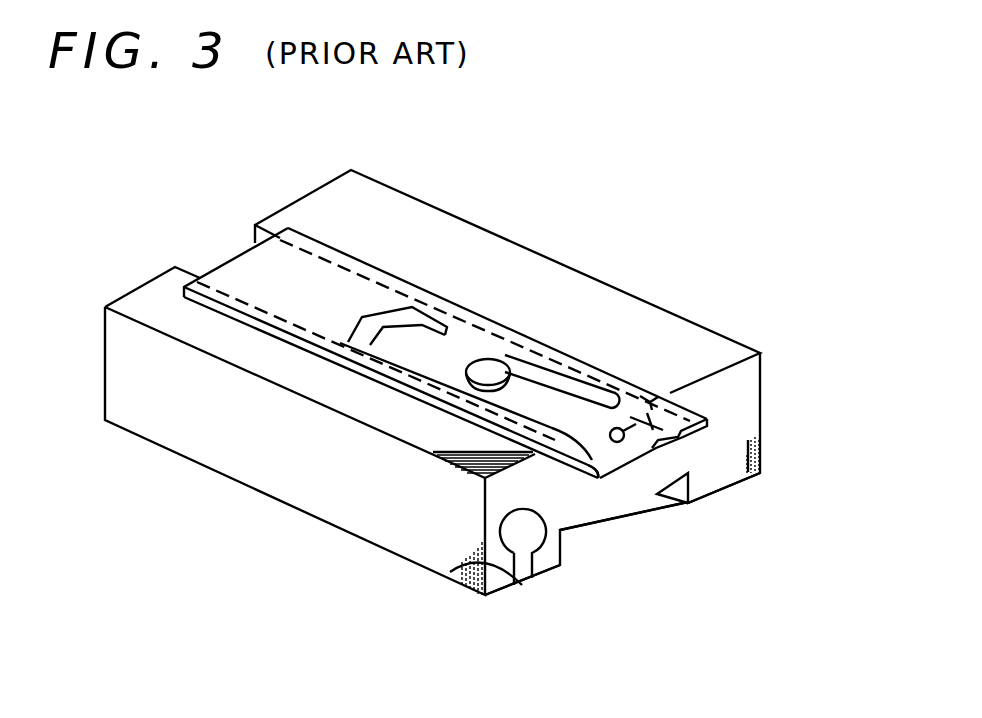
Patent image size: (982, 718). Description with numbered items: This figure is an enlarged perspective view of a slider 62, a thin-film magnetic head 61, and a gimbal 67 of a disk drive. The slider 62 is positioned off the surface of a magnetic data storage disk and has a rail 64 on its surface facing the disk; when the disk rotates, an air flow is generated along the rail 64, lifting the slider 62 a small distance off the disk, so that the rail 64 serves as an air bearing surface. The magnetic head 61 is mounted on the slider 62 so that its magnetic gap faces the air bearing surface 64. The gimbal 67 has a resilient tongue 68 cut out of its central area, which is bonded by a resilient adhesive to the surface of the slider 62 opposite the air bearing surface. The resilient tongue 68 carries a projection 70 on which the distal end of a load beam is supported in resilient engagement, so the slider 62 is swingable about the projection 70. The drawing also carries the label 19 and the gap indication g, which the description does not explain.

The slider 62 is at (738, 415).
The gimbal 67 is at (748, 467).
The resilient tongue 68 is at (437, 345).
The projection 70 is at (490, 372).
The plate end portion 19 is at (606, 465).
The thin-film magnetic head 61 is at (533, 543).
The gap g is at (485, 562).
The rail 64 is at (742, 480).